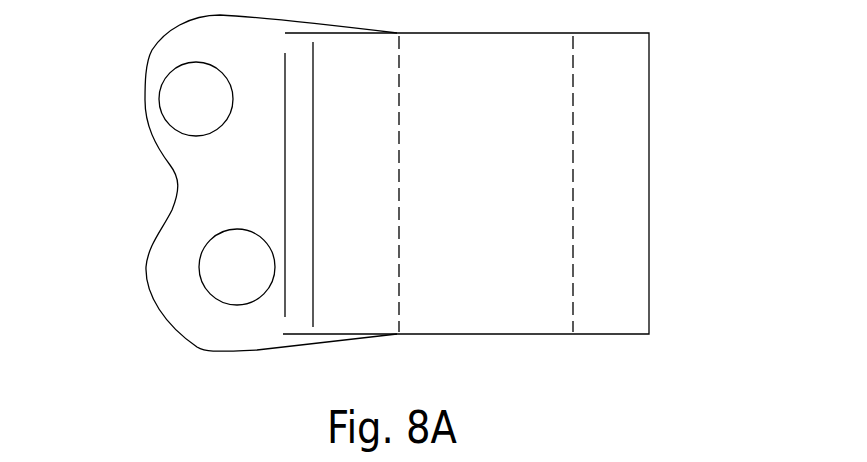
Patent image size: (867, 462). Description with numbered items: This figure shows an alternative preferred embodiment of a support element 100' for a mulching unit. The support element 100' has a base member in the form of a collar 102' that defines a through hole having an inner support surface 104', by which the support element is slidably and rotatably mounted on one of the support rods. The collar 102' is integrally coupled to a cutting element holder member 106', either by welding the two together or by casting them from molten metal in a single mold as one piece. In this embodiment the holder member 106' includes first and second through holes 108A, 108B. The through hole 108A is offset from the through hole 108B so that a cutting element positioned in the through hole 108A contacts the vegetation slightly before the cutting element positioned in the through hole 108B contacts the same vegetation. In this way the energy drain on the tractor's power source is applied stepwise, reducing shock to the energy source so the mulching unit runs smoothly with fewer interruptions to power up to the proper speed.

The support element 100' is at (773, 75).
The collar 102' is at (510, 220).
The inner support surface 104' is at (491, 229).
The cutting element holder member 106' is at (226, 183).
The first through hole 108A is at (157, 103).
The second through hole 108B is at (238, 305).